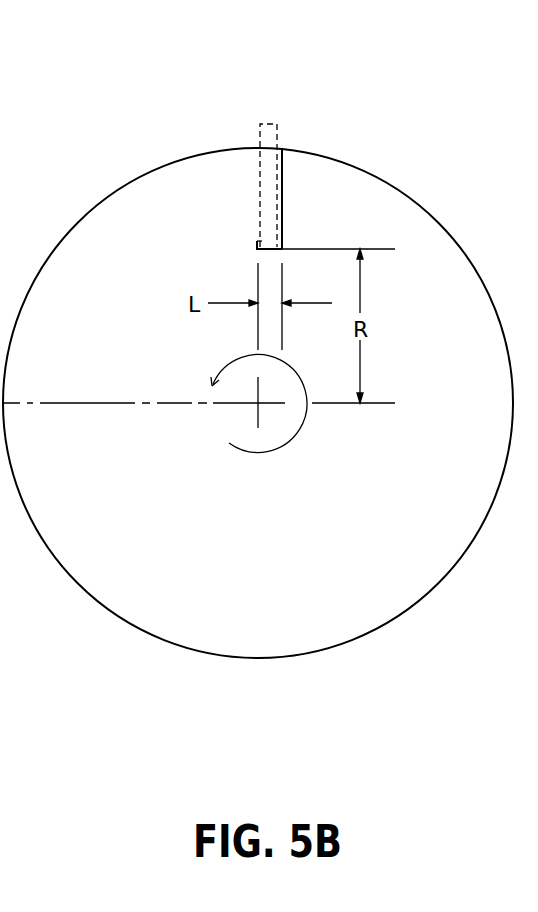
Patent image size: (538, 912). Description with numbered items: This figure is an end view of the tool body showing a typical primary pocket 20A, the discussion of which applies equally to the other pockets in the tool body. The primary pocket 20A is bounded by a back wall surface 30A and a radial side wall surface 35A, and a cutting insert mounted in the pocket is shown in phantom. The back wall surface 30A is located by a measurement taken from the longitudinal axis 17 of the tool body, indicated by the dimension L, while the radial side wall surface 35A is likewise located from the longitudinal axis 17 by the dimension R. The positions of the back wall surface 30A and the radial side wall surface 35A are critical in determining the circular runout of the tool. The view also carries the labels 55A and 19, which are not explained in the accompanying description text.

The primary pocket 20A is at (282, 187).
The extended blade position 55A is at (281, 210).
The back wall surface 30A is at (283, 243).
The radial side wall surface 35A is at (260, 240).
The longitudinal axis 17 is at (255, 404).
The rotation direction 19 is at (253, 452).